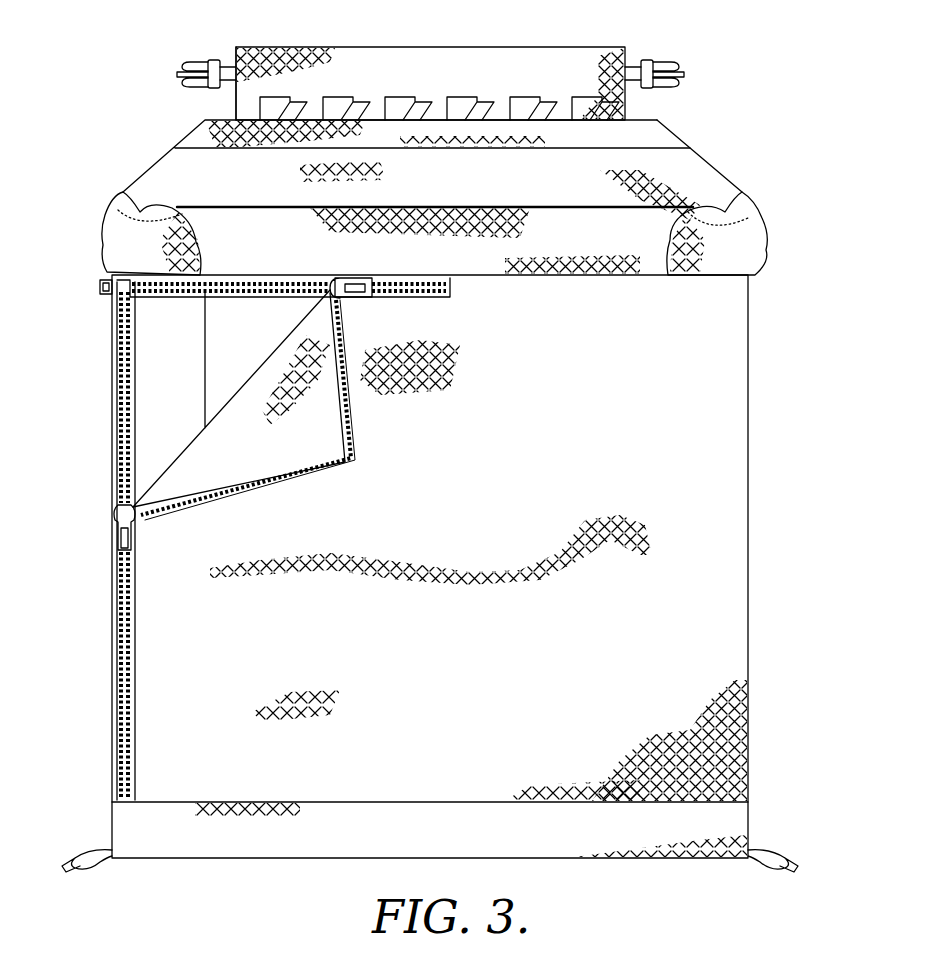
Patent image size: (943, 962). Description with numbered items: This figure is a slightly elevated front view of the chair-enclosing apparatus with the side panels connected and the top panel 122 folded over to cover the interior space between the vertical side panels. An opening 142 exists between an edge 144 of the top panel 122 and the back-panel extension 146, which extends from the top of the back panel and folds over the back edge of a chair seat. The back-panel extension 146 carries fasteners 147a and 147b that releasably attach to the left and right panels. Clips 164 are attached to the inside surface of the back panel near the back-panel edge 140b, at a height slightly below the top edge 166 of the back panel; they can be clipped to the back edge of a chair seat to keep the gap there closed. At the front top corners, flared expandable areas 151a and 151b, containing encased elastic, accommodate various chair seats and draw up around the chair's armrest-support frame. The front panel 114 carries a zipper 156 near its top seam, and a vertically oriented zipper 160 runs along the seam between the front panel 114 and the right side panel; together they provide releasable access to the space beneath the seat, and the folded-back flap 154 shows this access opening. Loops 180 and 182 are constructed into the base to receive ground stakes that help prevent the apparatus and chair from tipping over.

The front panel 114 is at (748, 398).
The top panel 122 is at (700, 185).
The back-panel edge 140b is at (244, 120).
The opening 142 is at (215, 130).
The edge of top panel 144 is at (650, 147).
The back-panel extension 146 is at (346, 52).
The fastener 147a is at (653, 62).
The fastener 147b is at (212, 60).
The expandable area 151a is at (770, 240).
The expandable area 151b is at (110, 240).
The access flap 154 is at (150, 396).
The zipper 156 is at (420, 302).
The zipper 160 is at (110, 670).
The clips 164 is at (546, 110).
The top edge of back panel 166 is at (383, 47).
The loop 180 is at (92, 846).
The loop 182 is at (774, 846).